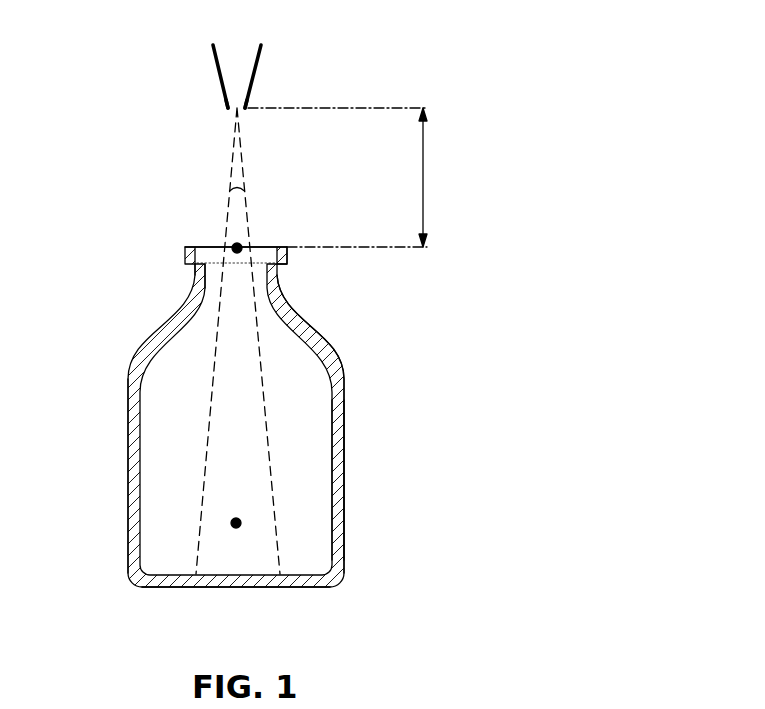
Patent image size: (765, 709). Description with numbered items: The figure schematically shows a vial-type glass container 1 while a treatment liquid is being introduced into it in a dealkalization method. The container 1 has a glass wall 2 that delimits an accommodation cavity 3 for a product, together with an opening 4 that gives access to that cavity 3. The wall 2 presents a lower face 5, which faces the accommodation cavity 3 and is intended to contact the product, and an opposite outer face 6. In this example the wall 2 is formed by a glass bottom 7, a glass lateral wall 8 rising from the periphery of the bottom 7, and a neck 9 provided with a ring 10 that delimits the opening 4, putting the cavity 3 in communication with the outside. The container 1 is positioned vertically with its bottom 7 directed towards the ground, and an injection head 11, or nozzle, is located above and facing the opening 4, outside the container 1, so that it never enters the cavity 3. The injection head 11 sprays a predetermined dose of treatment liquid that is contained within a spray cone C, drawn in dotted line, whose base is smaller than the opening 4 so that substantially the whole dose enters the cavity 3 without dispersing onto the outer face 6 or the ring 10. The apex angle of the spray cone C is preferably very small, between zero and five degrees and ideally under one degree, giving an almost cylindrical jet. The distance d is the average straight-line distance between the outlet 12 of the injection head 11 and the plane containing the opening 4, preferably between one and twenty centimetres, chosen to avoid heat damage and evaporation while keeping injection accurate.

The glass container 1 is at (137, 267).
The wall 2 is at (348, 375).
The accommodation cavity 3 is at (231, 523).
The opening 4 is at (232, 248).
The lower face 5 is at (343, 543).
The outer face 6 is at (343, 483).
The bottom 7 is at (227, 587).
The lateral wall 8 is at (127, 455).
The neck 9 is at (196, 279).
The ring 10 is at (290, 263).
The injection head 11 is at (263, 50).
The outlet 12 is at (228, 108).
The spray cone C is at (226, 197).
The distance d is at (352, 177).